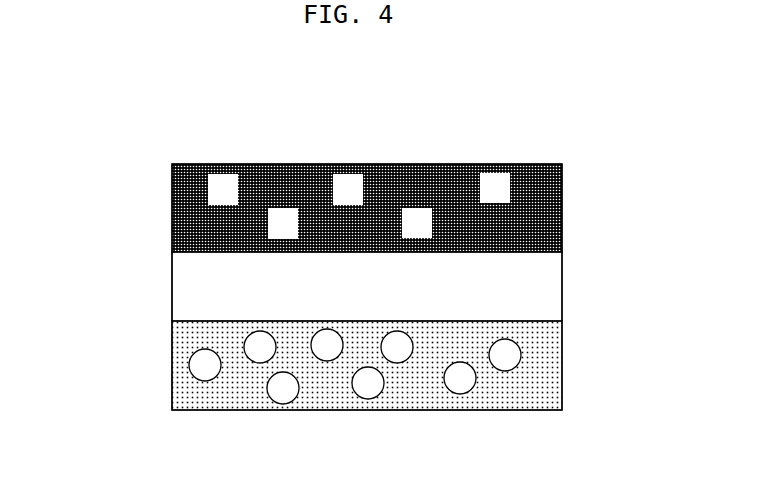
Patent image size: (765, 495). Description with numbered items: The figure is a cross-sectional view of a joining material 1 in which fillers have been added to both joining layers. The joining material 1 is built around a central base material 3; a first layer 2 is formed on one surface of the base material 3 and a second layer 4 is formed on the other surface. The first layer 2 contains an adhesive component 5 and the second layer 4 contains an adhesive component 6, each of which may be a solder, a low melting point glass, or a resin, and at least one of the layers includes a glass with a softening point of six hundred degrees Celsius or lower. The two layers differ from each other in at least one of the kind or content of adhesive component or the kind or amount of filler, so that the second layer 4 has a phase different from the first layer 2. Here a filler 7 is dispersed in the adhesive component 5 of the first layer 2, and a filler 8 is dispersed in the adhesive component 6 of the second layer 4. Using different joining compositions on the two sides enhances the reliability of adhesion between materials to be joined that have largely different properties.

The joining material 1 is at (578, 163).
The first layer 2 is at (160, 165).
The base material 3 is at (163, 253).
The second layer 4 is at (160, 330).
The adhesive component 5 is at (279, 186).
The adhesive component 6 is at (418, 385).
The filler 7 is at (492, 193).
The filler 8 is at (283, 390).